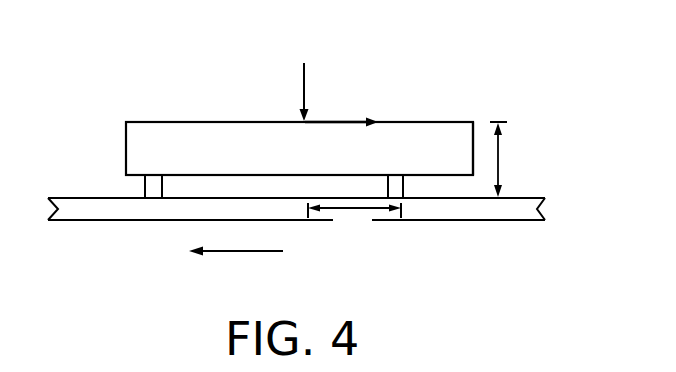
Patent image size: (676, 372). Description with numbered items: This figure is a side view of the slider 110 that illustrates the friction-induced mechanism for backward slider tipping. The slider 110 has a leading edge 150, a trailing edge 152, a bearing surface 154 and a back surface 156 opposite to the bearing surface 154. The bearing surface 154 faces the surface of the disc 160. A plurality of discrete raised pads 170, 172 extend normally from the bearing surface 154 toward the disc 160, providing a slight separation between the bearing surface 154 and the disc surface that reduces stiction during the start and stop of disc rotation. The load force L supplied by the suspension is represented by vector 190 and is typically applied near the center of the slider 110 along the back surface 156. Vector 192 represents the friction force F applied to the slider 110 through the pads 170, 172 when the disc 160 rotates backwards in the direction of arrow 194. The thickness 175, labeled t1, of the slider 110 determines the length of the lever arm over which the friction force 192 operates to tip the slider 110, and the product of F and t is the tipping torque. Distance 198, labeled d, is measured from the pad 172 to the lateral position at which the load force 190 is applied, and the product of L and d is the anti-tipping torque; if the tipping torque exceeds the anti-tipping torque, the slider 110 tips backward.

The slider 110 is at (154, 95).
The leading edge 150 is at (126, 153).
The trailing edge 152 is at (473, 121).
The bearing surface 154 is at (247, 177).
The back surface 156 is at (247, 121).
The disc 160 is at (512, 210).
The pad 170 is at (145, 188).
The pad 172 is at (405, 183).
The thickness 175 is at (499, 160).
The vector 190 is at (303, 82).
The vector 192 is at (330, 121).
The arrow 194 is at (241, 251).
The distance 198 is at (336, 213).